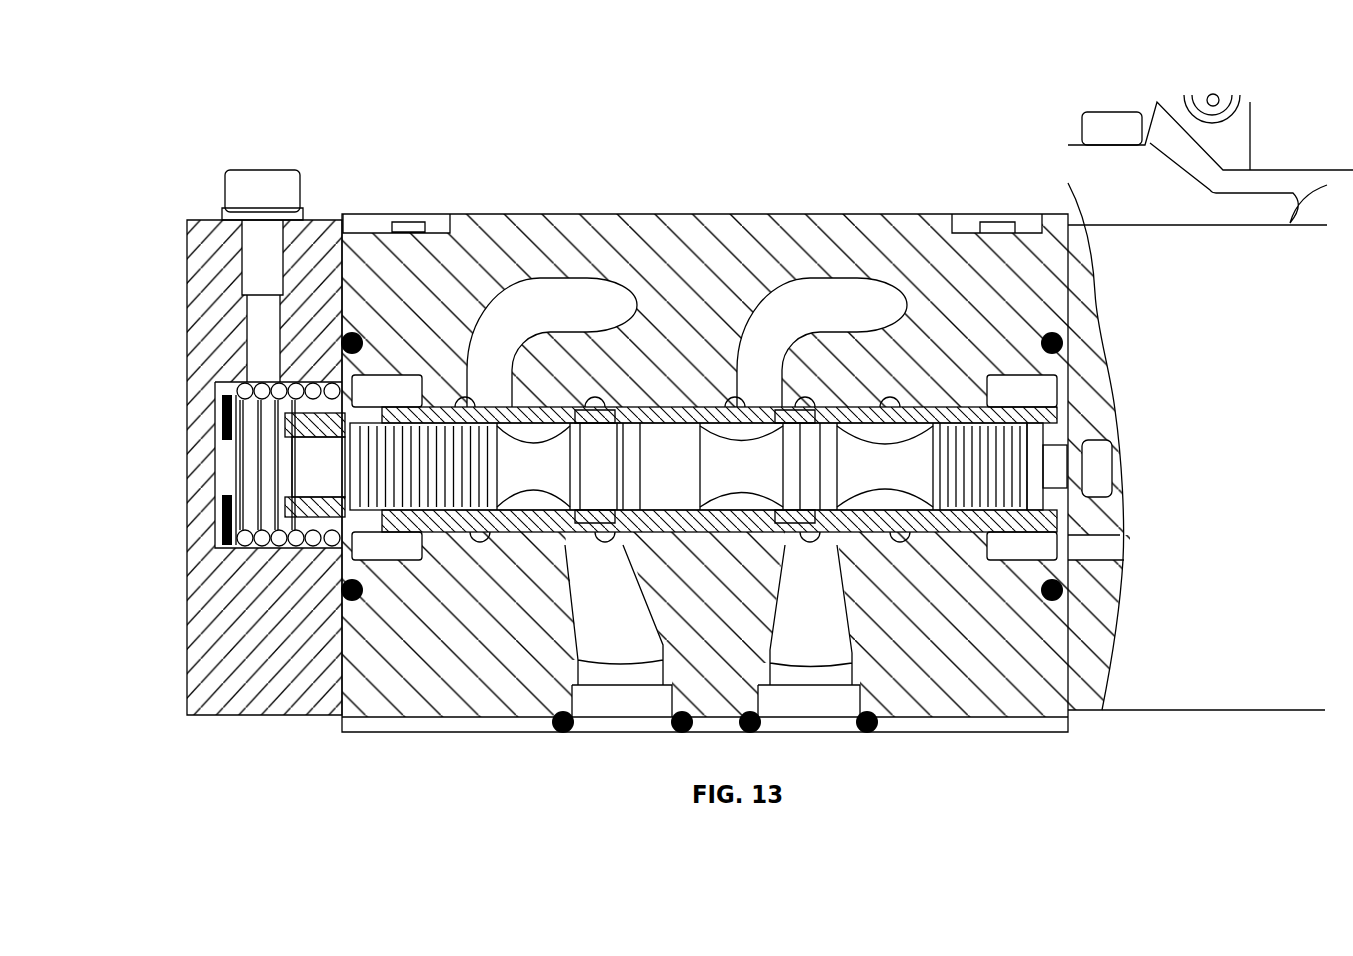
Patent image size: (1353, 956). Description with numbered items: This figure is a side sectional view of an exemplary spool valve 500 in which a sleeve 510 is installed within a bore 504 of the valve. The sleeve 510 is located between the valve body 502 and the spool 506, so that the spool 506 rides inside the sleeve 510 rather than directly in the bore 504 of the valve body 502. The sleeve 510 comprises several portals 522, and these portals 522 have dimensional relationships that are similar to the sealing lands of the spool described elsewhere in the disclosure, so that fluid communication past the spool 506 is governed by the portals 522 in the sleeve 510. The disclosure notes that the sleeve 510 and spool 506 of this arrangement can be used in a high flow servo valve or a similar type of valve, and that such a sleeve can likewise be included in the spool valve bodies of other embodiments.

The spool valve 500 is at (170, 112).
The valve body 502 is at (700, 245).
The bore 504 is at (378, 390).
The spool 506 is at (672, 462).
The sleeve 510 is at (440, 410).
The portals 522 is at (595, 412).